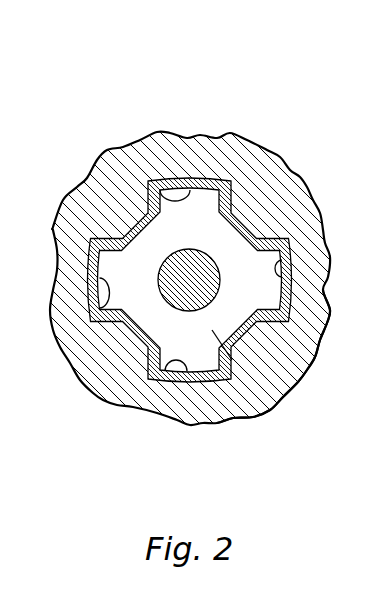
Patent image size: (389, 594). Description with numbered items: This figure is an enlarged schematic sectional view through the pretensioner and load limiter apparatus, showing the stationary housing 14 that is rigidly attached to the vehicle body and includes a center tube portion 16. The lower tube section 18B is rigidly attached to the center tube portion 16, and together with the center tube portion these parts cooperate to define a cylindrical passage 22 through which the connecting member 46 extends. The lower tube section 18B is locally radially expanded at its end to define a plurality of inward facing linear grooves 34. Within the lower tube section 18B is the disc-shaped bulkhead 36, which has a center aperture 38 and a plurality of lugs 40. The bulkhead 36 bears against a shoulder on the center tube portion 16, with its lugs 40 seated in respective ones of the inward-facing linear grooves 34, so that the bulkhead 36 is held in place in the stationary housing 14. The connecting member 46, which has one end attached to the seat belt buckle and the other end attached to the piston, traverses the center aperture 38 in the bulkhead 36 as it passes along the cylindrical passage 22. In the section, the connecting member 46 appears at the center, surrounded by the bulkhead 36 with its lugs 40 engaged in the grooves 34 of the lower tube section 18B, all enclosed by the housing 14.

The stationary housing 14 is at (292, 128).
The center tube portion 16 is at (261, 150).
The lower tube section 18B is at (247, 213).
The cylindrical passage 22 is at (147, 340).
The inward facing linear grooves 34 is at (141, 162).
The disc-shaped bulkhead 36 is at (158, 228).
The center aperture 38 is at (305, 363).
The lugs 40 is at (68, 214).
The connecting member 46 is at (275, 410).